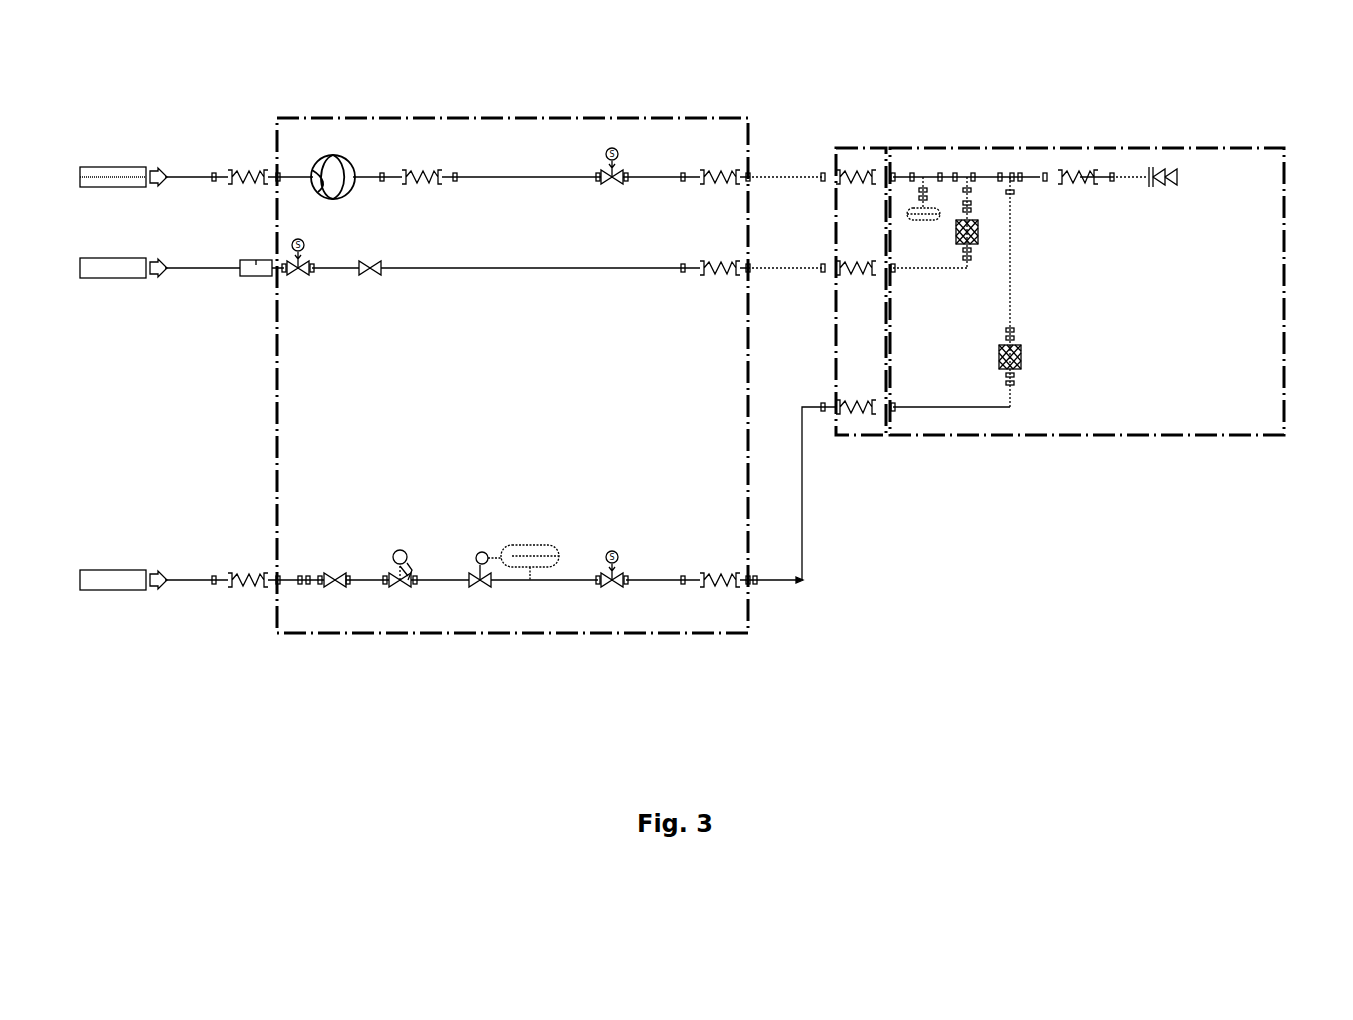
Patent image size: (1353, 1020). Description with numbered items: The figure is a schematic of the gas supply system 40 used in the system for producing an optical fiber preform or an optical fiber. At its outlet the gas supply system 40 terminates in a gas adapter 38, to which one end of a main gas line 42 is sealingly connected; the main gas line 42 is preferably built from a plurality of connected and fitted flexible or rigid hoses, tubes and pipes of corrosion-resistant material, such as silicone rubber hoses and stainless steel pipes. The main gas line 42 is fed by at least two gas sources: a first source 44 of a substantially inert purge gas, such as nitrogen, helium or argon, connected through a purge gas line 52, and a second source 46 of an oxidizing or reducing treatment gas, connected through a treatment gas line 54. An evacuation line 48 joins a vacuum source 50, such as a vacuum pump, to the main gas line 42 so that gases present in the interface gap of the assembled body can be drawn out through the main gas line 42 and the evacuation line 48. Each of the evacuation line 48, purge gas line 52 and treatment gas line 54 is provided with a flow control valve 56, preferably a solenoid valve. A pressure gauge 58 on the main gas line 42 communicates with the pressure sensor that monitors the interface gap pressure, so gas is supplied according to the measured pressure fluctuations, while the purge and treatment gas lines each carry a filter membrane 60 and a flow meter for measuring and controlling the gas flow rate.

The gas adapter 38 is at (1160, 170).
The gas supply system 40 is at (1264, 100).
The main gas line 42 is at (1020, 170).
The first source of purge gas 44 is at (123, 580).
The second source of treatment gas 46 is at (123, 268).
The evacuation line 48 is at (494, 169).
The vacuum source 50 is at (330, 152).
The purge gas line 52 is at (500, 497).
The treatment gas line 54 is at (494, 260).
The flow control valve 56 is at (612, 186).
The pressure gauge 58 is at (915, 206).
The filter membrane 60 is at (1078, 357).